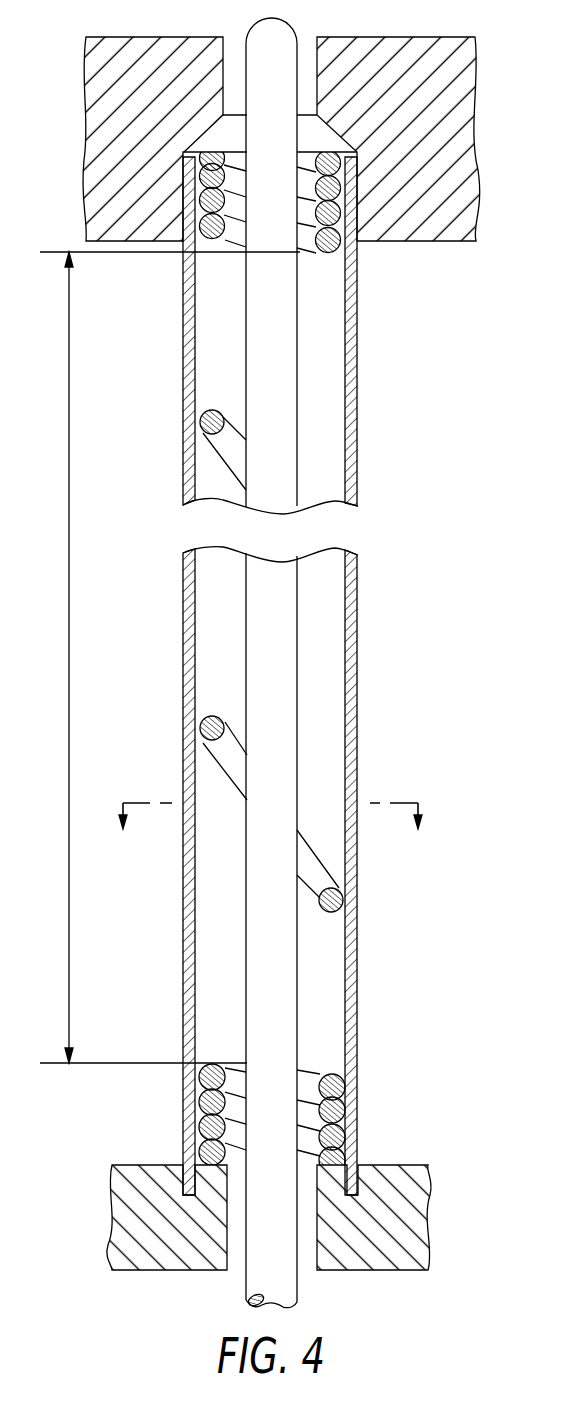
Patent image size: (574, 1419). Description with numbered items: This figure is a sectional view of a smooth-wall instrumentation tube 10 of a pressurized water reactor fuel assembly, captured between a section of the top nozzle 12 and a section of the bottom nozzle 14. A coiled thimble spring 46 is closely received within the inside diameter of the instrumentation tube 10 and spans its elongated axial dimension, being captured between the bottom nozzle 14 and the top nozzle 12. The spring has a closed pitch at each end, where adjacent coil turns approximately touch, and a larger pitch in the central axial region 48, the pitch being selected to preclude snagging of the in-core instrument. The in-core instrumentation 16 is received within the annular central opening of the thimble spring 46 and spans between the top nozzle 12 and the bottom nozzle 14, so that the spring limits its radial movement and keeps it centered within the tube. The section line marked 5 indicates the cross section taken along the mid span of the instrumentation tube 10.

The instrumentation tube 10 is at (358, 637).
The top nozzle 12 is at (424, 243).
The bottom nozzle 14 is at (398, 1165).
The in-core instrumentation 16 is at (298, 976).
The coiled thimble spring 46 is at (331, 1075).
The central axial region 48 is at (69, 667).
The section line 5- 5 is at (271, 791).